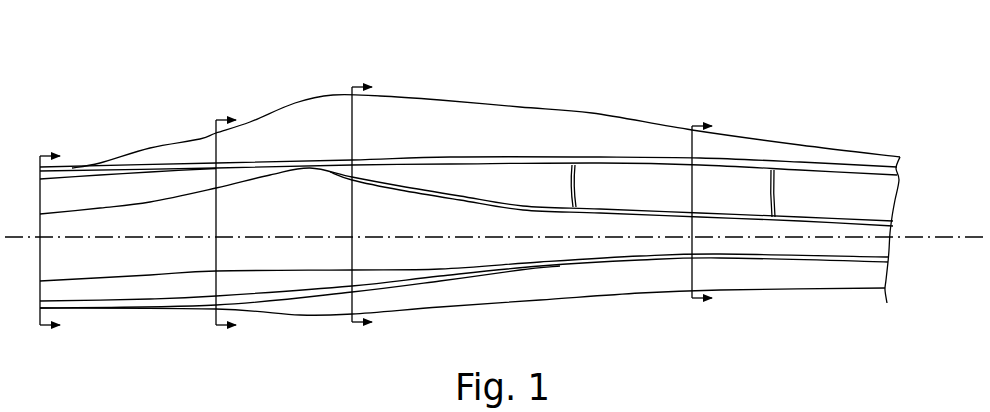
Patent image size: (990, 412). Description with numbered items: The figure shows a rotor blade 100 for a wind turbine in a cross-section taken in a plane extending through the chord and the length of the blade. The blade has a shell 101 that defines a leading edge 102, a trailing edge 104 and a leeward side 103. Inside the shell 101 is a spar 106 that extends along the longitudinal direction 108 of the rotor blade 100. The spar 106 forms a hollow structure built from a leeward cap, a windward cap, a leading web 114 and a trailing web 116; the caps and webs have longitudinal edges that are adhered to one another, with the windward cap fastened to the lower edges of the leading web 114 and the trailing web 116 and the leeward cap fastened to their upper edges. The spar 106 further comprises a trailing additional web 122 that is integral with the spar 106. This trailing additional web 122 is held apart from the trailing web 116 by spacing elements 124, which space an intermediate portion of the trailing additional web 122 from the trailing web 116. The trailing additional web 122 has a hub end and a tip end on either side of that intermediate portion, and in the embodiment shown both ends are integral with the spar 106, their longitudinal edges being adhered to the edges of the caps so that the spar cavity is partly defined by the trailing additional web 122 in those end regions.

The rotor blade 100 is at (843, 310).
The shell 101 is at (295, 97).
The leading edge 102 is at (617, 295).
The leeward side 103 is at (141, 411).
The trailing edge 104 is at (595, 113).
The spar 106 is at (877, 230).
The longitudinal direction 108 is at (935, 240).
The leading web 114 is at (742, 258).
The trailing web 116 is at (718, 213).
The trailing additional web 122 is at (863, 175).
The spacing elements 124 is at (577, 180).